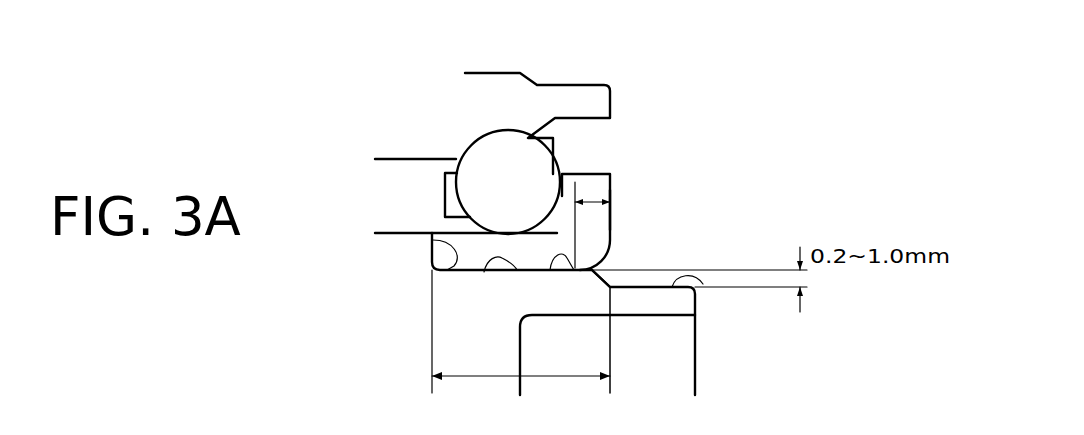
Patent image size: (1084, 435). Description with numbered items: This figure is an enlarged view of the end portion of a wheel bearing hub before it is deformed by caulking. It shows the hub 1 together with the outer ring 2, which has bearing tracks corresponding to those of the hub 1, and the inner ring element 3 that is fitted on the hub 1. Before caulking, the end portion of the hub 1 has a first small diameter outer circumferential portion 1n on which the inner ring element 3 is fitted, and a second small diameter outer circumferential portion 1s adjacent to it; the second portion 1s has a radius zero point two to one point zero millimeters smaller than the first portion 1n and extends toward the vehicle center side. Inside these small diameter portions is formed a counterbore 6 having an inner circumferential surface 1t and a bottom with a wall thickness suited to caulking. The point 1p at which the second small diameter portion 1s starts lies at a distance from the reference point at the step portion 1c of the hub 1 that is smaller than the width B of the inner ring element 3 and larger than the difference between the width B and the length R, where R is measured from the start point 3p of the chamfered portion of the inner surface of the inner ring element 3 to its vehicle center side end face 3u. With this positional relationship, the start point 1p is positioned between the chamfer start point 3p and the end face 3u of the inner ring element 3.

The hub 1 is at (397, 211).
The step portion 1c is at (454, 268).
The first small diameter outer circumferential portion 1n is at (484, 272).
The start point of the second small diameter outer circumferential portion 1p is at (605, 268).
The second small diameter outer circumferential portion 1s is at (703, 284).
The inner circumferential surface 1t is at (658, 316).
The outer ring 2 is at (478, 86).
The inner ring element 3 is at (587, 182).
The end face 3u is at (612, 212).
The start point of the chamfered portion 3p is at (552, 256).
The counterbore 6 is at (672, 378).
The length from the start point of the chamfered portion to the end face R is at (609, 193).
The width of the inner ring element B is at (521, 331).